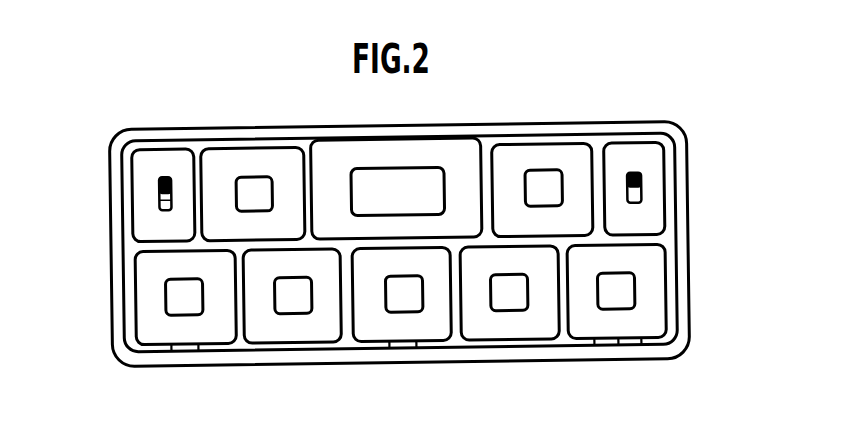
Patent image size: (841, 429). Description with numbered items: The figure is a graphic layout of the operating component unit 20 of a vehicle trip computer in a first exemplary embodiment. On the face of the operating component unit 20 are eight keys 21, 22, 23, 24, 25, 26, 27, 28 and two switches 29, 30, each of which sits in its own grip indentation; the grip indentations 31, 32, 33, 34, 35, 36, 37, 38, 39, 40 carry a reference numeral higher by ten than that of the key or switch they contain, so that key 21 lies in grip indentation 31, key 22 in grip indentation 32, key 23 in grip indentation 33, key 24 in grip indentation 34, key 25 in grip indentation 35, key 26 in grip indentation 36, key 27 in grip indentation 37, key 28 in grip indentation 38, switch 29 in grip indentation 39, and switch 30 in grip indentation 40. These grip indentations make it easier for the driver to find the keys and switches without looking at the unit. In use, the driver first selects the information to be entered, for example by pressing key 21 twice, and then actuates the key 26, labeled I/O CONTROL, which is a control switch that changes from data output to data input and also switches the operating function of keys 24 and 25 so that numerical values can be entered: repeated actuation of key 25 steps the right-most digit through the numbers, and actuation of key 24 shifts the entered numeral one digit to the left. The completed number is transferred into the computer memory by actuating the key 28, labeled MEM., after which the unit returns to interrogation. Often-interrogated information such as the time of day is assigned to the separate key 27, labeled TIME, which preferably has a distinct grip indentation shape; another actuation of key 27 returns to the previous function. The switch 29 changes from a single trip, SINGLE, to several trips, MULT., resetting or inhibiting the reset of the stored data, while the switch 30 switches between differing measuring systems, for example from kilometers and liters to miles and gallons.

The operating component unit 20 is at (120, 242).
The key 21 is at (183, 298).
The key 22 is at (288, 297).
The key 23 is at (405, 297).
The key 24 is at (510, 297).
The key 25 is at (618, 290).
The I/O CONTROL key 26 is at (257, 187).
The TIME key 27 is at (412, 182).
The MEM. key 28 is at (547, 183).
The switch 29 is at (643, 178).
The switch 30 is at (165, 187).
The grip indentation 31 is at (157, 332).
The grip indentation 32 is at (273, 328).
The grip indentation 33 is at (380, 325).
The grip indentation 34 is at (493, 325).
The grip indentation 35 is at (590, 318).
The grip indentation 36 is at (235, 158).
The grip indentation 37 is at (358, 152).
The grip indentation 38 is at (517, 158).
The grip indentation 39 is at (618, 145).
The grip indentation 40 is at (142, 155).